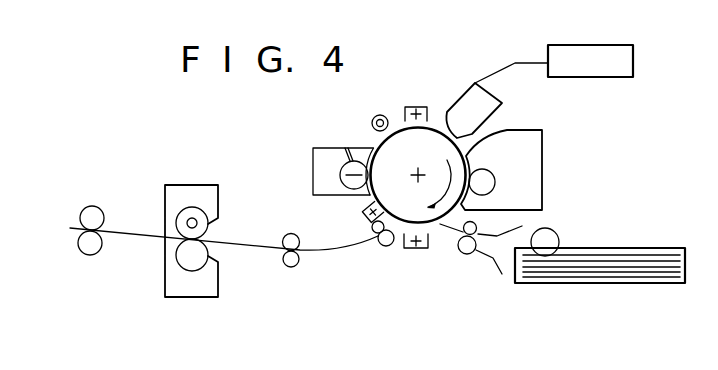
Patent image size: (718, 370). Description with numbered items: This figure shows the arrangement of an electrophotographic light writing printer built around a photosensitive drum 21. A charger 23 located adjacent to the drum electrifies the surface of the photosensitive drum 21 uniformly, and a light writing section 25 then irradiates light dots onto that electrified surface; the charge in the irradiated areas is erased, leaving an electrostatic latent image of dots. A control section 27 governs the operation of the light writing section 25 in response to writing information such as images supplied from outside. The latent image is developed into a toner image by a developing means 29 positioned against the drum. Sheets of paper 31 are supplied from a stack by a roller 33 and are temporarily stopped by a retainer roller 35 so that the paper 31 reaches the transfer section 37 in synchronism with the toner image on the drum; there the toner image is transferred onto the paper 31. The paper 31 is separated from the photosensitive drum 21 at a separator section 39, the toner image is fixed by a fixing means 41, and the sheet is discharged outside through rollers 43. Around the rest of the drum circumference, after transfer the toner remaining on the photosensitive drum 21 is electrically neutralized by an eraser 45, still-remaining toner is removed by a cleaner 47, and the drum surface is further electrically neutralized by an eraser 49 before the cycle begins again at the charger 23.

The photosensitive drum 21 is at (402, 140).
The charger 23 is at (418, 106).
The light writing section 25 is at (504, 107).
The control section 27 is at (634, 62).
The developing means 29 is at (546, 148).
The paper 31 is at (651, 248).
The roller 33 is at (551, 229).
The retainer roller 35 is at (466, 255).
The transfer section 37 is at (417, 249).
The separator section 39 is at (384, 247).
The fixing means 41 is at (186, 192).
The rollers 43 is at (92, 206).
The eraser 45 is at (360, 209).
The cleaner 47 is at (318, 148).
The eraser 49 is at (370, 118).